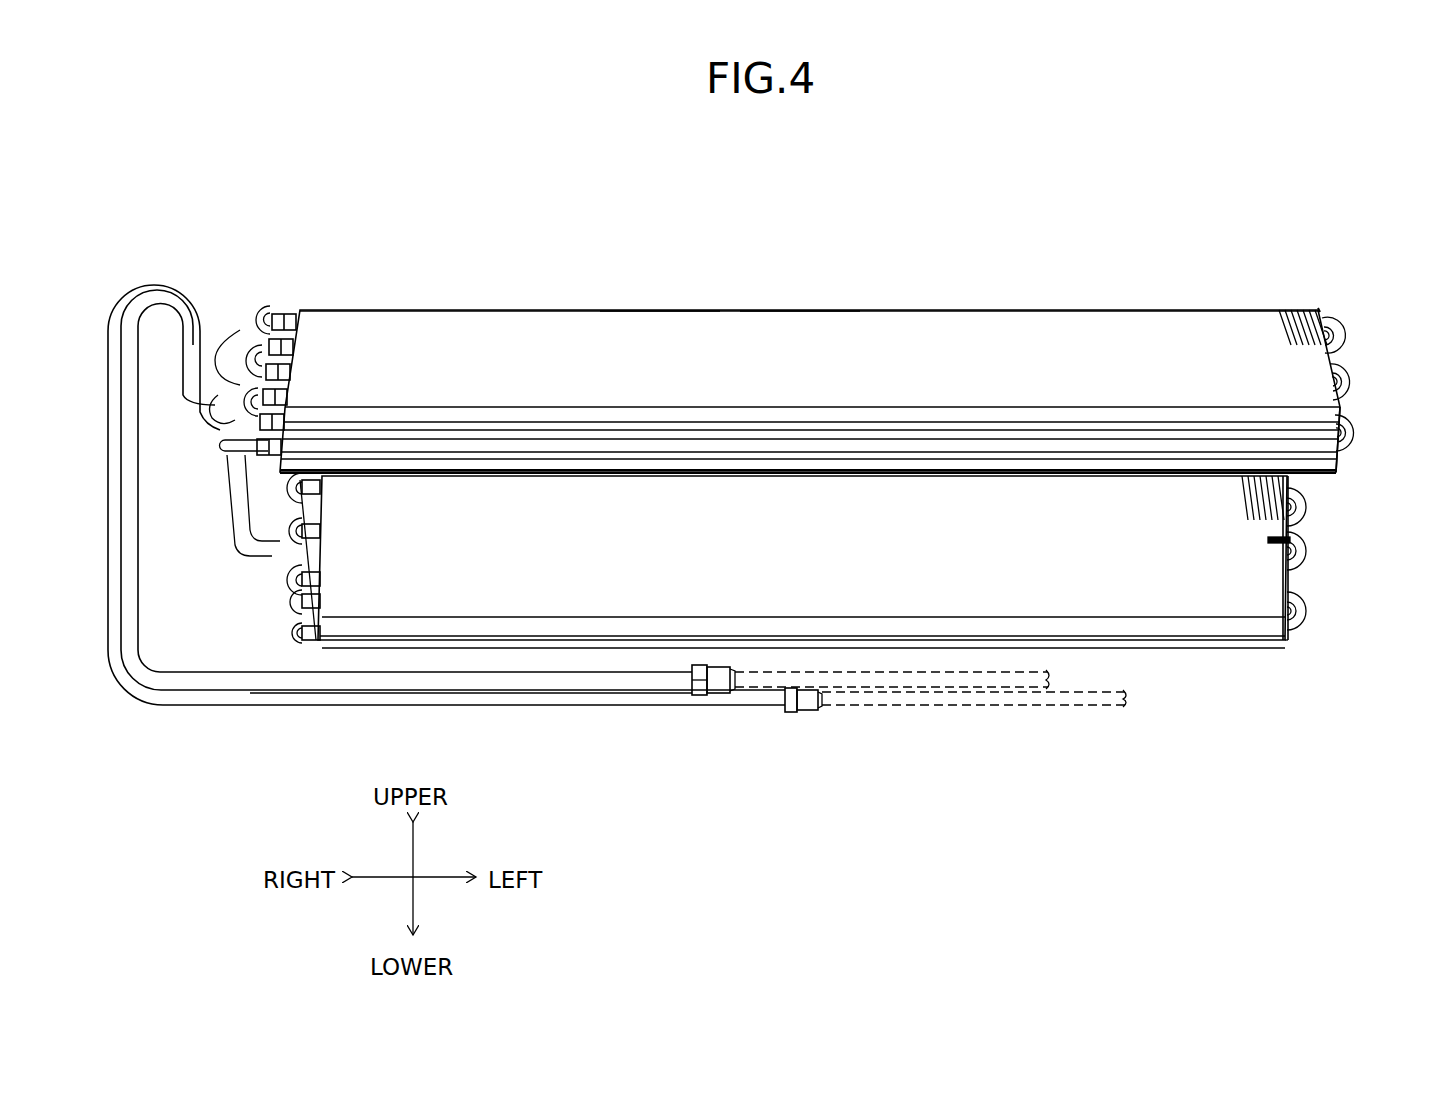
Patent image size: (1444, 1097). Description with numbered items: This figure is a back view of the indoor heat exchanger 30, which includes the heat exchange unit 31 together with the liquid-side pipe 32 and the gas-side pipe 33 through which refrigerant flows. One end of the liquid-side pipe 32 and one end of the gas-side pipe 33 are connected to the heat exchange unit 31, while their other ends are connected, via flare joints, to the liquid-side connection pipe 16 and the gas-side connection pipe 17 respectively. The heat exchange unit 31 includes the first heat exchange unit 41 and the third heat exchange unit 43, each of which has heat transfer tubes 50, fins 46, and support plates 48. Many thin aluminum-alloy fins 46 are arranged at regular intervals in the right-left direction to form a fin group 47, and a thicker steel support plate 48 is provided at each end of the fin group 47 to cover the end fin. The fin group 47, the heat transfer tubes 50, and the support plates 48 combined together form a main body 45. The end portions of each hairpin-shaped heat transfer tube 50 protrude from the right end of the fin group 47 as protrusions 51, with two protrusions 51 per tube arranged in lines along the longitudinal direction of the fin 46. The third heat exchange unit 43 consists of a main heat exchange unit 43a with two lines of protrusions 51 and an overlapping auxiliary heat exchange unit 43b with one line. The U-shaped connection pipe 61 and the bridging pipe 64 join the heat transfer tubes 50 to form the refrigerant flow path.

The indoor heat exchanger 30 is at (1168, 188).
The heat exchange unit 31 is at (1215, 308).
The first heat exchange unit 41 is at (1225, 650).
The third heat exchange unit 43 is at (545, 310).
The main heat exchange unit 43a is at (1340, 462).
The auxiliary heat exchange unit 43b is at (655, 310).
The main body 45 is at (790, 310).
The fin 46 is at (1285, 332).
The fin group 47 is at (947, 433).
The support plate 48 is at (1333, 318).
The heat transfer tube 50 is at (1368, 430).
The protrusion 51 is at (280, 310).
The U-shaped connection pipe 61 is at (270, 632).
The bridging pipe 64 is at (245, 300).
The liquid-side pipe 32 is at (637, 700).
The gas-side pipe 33 is at (527, 682).
The liquid-side connection pipe 16 is at (975, 705).
The gas-side connection pipe 17 is at (888, 690).